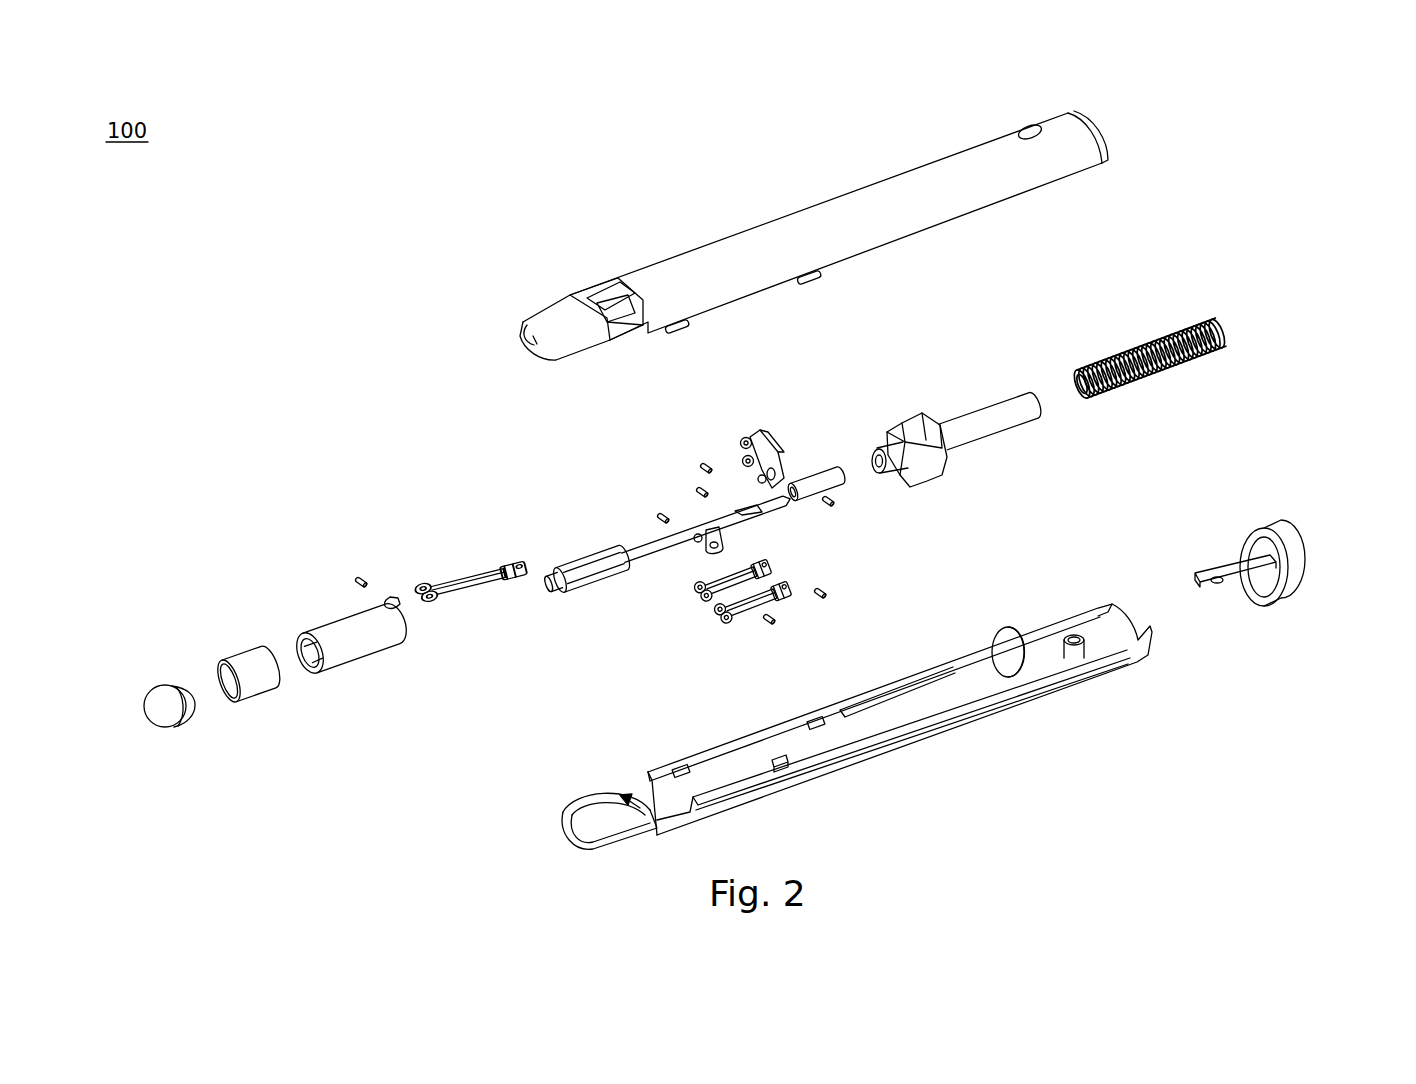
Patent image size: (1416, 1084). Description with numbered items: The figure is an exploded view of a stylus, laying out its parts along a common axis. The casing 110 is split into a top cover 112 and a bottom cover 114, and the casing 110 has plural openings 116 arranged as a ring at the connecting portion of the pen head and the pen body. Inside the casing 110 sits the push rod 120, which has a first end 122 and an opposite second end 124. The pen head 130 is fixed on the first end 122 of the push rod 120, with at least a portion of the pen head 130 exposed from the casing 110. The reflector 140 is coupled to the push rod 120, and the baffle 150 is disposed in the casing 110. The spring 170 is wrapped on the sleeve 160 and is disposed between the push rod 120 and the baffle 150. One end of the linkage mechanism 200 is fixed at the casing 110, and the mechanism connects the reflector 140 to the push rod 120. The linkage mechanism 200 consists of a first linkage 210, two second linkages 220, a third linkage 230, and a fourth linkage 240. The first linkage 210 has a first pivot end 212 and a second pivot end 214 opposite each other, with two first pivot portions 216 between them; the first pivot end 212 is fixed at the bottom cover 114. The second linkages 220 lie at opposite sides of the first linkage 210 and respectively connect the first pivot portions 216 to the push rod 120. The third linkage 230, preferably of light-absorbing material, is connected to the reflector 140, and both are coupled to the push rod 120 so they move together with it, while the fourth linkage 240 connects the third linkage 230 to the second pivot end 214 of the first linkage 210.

The casing 110 is at (1344, 157).
The top cover 112 is at (1043, 188).
The bottom cover 114 is at (1068, 618).
The openings 116 is at (605, 790).
The push rod 120 is at (637, 548).
The first end 122 is at (548, 582).
The second end 124 is at (820, 478).
The pen head 130 is at (160, 703).
The reflector 140 is at (243, 667).
The baffle 150 is at (1002, 650).
The sleeve 160 is at (967, 420).
The spring 170 is at (1127, 352).
The linkage mechanism 200 is at (748, 622).
The first linkage 210 is at (768, 437).
The first pivot end 212 is at (760, 512).
The second pivot end 214 is at (743, 443).
The first pivot portions 216 is at (743, 457).
The second linkages 220 is at (700, 592).
The third linkage 230 is at (333, 638).
The fourth linkage 240 is at (453, 572).